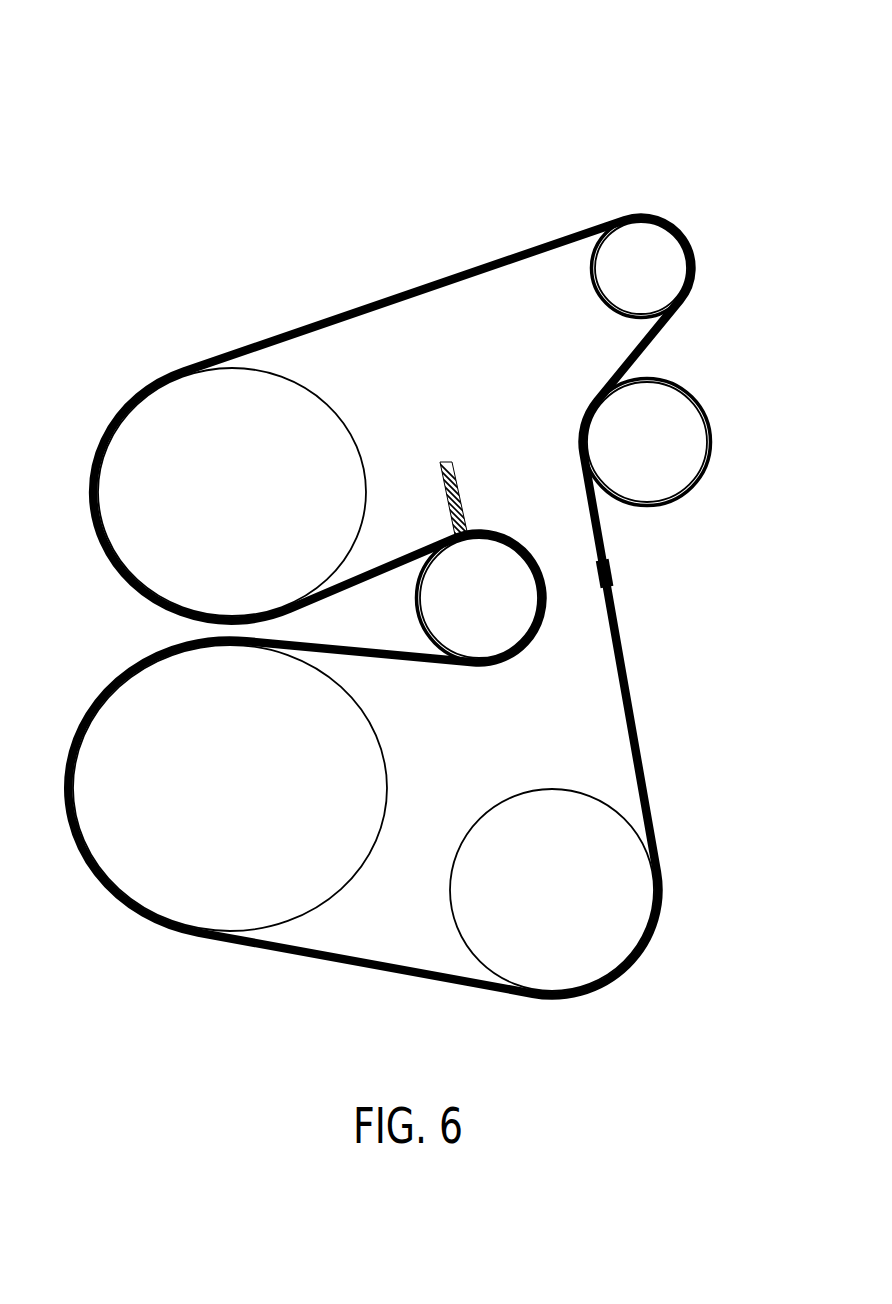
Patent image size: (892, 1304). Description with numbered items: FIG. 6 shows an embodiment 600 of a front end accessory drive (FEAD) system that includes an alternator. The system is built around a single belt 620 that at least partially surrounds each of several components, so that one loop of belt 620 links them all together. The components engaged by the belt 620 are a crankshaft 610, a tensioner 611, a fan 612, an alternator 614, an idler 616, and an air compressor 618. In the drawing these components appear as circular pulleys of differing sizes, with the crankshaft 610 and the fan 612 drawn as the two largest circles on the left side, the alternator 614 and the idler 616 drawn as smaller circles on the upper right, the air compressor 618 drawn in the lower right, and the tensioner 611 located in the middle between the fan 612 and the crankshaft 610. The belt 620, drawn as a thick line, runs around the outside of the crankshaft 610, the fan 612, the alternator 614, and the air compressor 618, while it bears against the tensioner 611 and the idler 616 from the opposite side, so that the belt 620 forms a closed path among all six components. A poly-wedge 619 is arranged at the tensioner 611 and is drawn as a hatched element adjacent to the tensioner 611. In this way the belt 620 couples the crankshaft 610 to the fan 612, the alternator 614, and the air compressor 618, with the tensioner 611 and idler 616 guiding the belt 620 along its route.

The embodiment of a FEAD system 600 is at (737, 48).
The crankshaft 610 is at (218, 801).
The tensioner 611 is at (458, 614).
The fan 612 is at (214, 499).
The alternator 614 is at (624, 286).
The idler 616 is at (631, 456).
The air compressor 618 is at (537, 901).
The poly-wedge 619 is at (455, 488).
The belt 620 is at (426, 284).